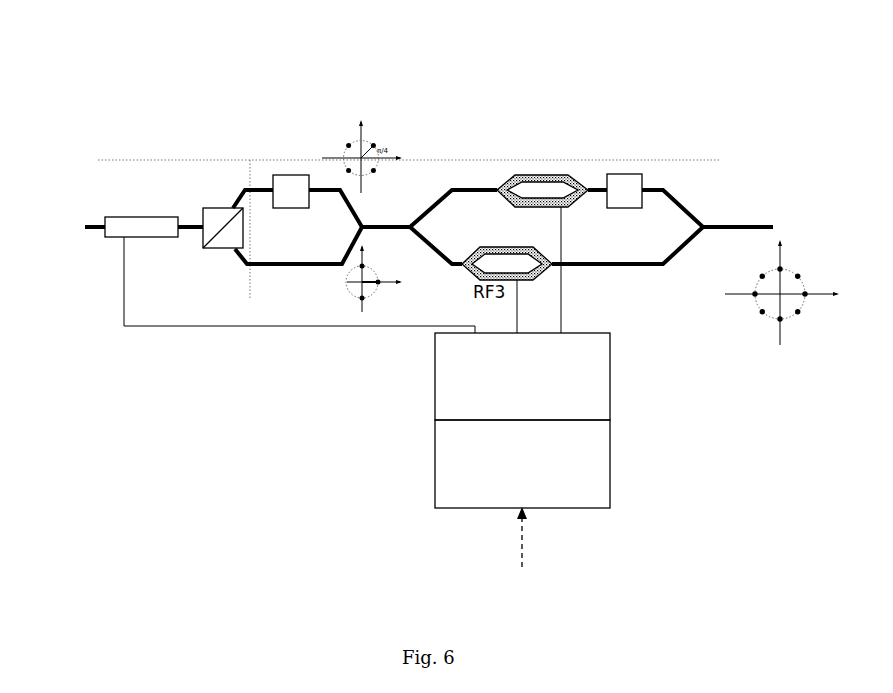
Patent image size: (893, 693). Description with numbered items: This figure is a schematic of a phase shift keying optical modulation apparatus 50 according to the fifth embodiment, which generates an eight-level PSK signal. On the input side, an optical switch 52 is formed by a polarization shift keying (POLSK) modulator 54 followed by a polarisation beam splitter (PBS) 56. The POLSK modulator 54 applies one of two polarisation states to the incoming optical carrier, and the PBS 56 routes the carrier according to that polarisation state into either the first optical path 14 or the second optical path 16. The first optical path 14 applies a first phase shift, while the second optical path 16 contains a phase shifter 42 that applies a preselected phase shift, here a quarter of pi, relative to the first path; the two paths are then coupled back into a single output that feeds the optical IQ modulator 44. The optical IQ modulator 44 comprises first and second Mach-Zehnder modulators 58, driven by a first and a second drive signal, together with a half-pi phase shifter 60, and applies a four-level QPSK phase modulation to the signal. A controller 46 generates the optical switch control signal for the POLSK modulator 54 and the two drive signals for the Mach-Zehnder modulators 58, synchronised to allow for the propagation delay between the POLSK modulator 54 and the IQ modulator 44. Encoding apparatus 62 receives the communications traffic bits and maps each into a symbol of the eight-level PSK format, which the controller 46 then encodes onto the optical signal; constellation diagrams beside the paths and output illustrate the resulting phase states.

The PSK optical modulation apparatus 50 is at (499, 88).
The optical switch 52 is at (187, 173).
The POLSK modulator 54 is at (107, 233).
The polarisation beam splitter 56 is at (233, 207).
The pi/4 phase shifter 42 is at (290, 173).
The second optical path 16 is at (332, 193).
The first optical path 14 is at (303, 265).
The Mach-Zehnder modulators 58 is at (537, 172).
The π/2 phase shifter 60 is at (623, 173).
The optical IQ modulator 44 is at (697, 173).
The controller 46 is at (597, 362).
The encoding apparatus 62 is at (597, 463).